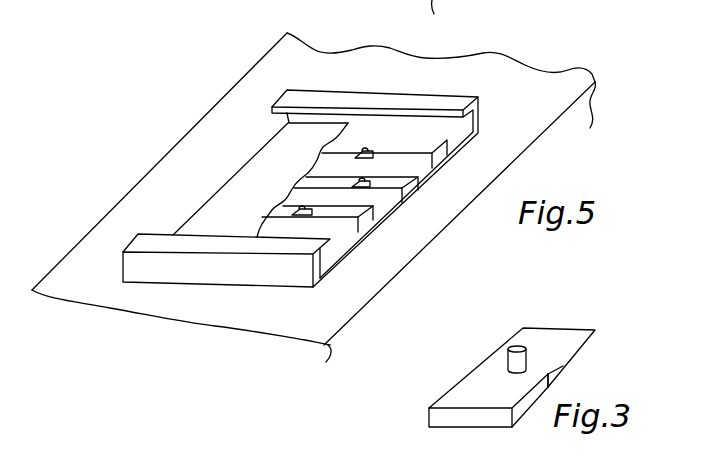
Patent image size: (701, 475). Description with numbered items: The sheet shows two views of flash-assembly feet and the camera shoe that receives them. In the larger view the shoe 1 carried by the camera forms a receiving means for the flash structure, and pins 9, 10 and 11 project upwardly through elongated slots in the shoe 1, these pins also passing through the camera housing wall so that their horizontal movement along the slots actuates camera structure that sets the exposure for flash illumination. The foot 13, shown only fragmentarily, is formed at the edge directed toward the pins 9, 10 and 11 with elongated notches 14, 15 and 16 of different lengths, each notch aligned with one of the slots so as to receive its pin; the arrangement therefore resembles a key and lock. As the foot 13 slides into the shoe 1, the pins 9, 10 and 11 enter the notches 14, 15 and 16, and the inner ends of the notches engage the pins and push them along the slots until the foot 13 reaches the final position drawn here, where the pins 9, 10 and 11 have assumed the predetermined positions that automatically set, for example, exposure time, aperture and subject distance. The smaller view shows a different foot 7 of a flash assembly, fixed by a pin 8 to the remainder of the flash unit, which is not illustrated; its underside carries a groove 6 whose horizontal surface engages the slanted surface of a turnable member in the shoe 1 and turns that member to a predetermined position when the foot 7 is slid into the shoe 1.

In FIG. 5, the shoe 1 is at (473, 133).
In FIG. 3, the groove 6 is at (553, 380).
In FIG. 3, the foot 7 is at (552, 343).
In FIG. 3, the pin 8 is at (519, 346).
In FIG. 5, the pin 9 is at (293, 212).
In FIG. 5, the pin 10 is at (355, 183).
In FIG. 5, the pin 11 is at (363, 153).
In FIG. 5, the foot 13 is at (337, 253).
In FIG. 5, the notch 14 is at (372, 220).
In FIG. 5, the notch 15 is at (402, 193).
In FIG. 5, the notch 16 is at (432, 160).